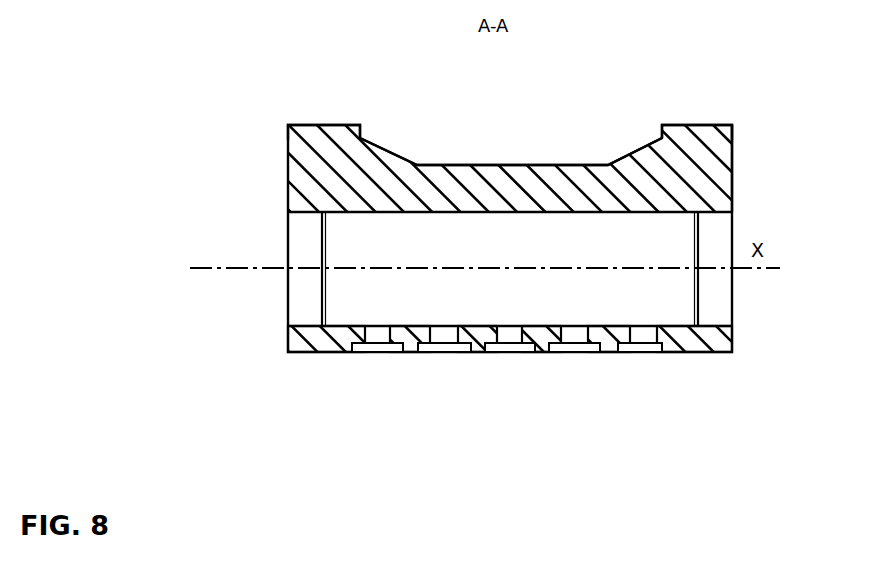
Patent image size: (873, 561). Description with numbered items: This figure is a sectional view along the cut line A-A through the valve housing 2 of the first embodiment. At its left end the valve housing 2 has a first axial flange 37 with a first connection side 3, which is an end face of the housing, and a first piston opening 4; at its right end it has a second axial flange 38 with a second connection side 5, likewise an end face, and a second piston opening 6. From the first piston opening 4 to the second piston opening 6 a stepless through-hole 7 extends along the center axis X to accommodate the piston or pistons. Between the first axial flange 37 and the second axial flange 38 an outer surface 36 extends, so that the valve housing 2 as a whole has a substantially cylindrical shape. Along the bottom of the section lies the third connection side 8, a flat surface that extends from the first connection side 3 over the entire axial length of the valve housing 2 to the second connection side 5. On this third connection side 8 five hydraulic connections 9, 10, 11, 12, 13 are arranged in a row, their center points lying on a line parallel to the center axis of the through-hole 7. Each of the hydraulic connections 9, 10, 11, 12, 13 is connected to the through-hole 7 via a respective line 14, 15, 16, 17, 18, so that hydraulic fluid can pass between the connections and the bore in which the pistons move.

The valve housing 2 is at (237, 123).
The first connection side 3 is at (271, 180).
The first piston opening 4 is at (278, 228).
The second connection side 5 is at (714, 180).
The second piston opening 6 is at (705, 306).
The through-hole 7 is at (548, 247).
The third connection side 8 is at (299, 353).
The hydraulic connection 9 is at (359, 353).
The hydraulic connection 10 is at (432, 352).
The hydraulic connection 11 is at (498, 353).
The hydraulic connection 12 is at (567, 353).
The hydraulic connection 13 is at (628, 347).
The line 14 is at (356, 336).
The line 15 is at (429, 334).
The line 16 is at (493, 338).
The line 17 is at (557, 342).
The line 18 is at (628, 337).
The outer surface 36 is at (484, 163).
The first axial flange 37 is at (305, 125).
The second axial flange 38 is at (686, 124).